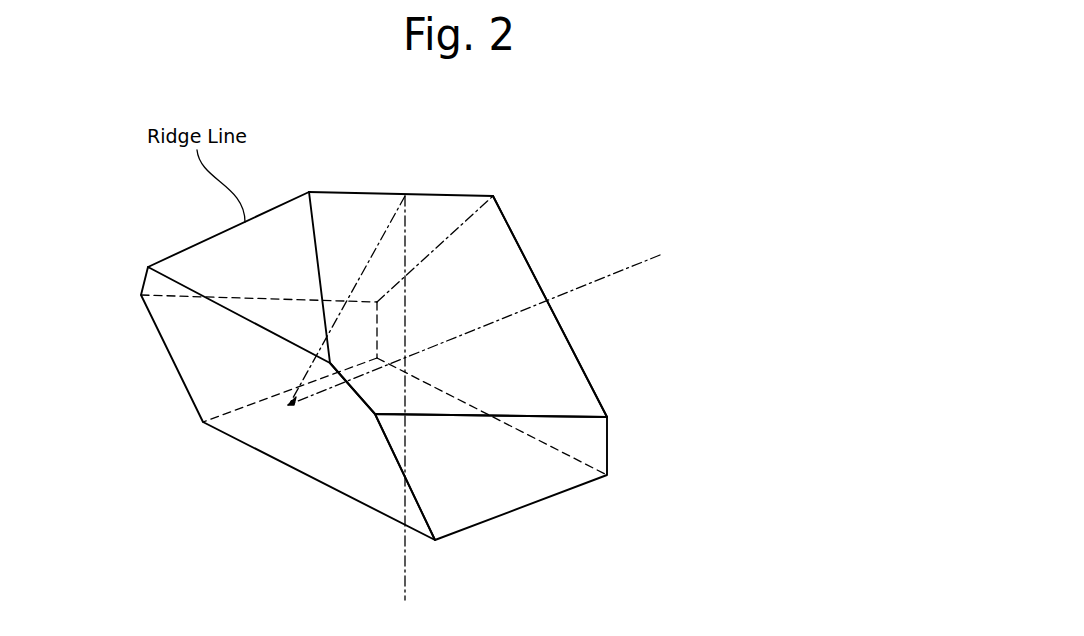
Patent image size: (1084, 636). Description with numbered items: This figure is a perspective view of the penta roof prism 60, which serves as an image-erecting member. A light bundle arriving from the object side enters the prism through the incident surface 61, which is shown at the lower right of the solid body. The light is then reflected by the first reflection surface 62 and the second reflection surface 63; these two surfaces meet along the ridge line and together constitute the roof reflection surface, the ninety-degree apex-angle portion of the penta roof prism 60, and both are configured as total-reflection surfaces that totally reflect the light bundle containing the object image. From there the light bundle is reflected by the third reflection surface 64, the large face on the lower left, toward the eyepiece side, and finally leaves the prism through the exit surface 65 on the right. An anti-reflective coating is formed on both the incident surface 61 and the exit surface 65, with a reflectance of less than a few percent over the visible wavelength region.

The penta roof prism 60 is at (742, 137).
The incident surface 61 is at (543, 480).
The first reflection surface 62 is at (505, 297).
The second reflection surface 63 is at (435, 212).
The third reflection surface 64 is at (311, 452).
The exit surface 65 is at (570, 387).